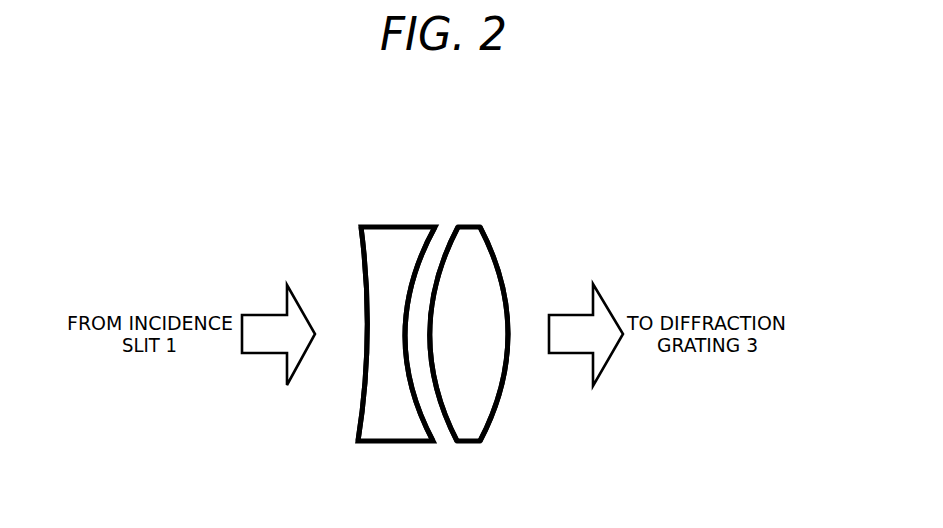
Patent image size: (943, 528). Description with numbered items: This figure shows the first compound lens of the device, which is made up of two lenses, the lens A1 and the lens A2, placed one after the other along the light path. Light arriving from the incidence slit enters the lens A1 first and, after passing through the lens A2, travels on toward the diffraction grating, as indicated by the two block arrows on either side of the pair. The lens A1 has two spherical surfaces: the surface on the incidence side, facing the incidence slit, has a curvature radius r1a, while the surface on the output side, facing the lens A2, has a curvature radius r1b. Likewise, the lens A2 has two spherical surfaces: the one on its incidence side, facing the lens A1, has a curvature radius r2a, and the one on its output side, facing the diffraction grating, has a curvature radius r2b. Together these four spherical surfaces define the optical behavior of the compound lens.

The lens A1 is at (343, 299).
The lens A2 is at (543, 337).
The curvature radius on the incidence side of lens A1 r1a is at (350, 282).
The curvature radius on the output side of lens A1 r1b is at (426, 264).
The curvature radius on the incidence side of lens A2 r2a is at (457, 270).
The curvature radius on the output side of lens A2 r2b is at (520, 292).